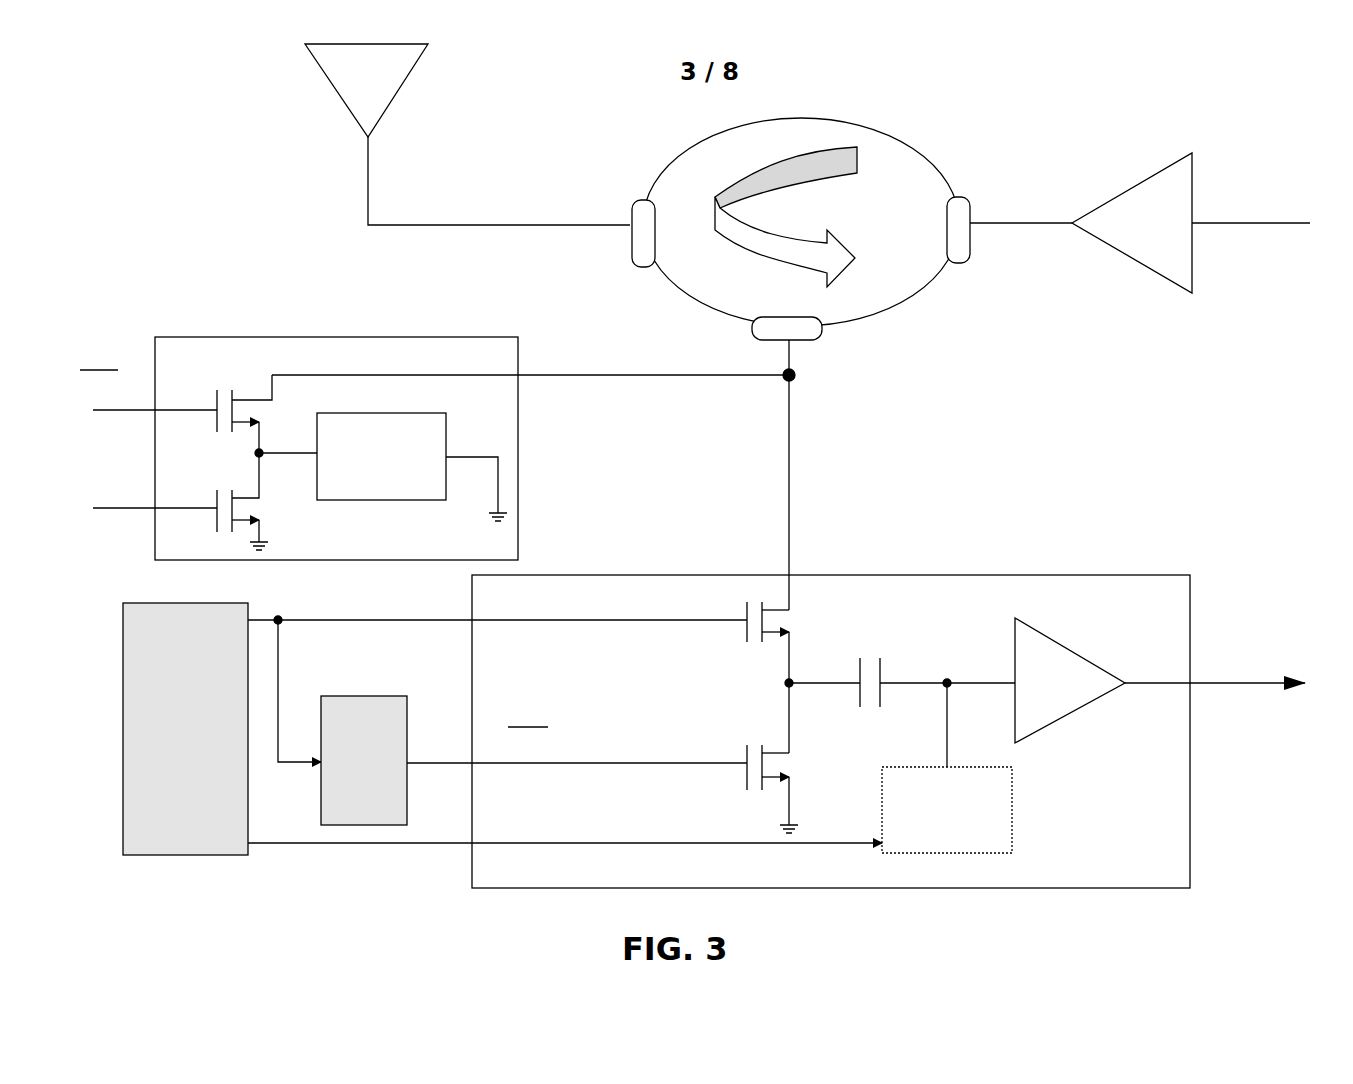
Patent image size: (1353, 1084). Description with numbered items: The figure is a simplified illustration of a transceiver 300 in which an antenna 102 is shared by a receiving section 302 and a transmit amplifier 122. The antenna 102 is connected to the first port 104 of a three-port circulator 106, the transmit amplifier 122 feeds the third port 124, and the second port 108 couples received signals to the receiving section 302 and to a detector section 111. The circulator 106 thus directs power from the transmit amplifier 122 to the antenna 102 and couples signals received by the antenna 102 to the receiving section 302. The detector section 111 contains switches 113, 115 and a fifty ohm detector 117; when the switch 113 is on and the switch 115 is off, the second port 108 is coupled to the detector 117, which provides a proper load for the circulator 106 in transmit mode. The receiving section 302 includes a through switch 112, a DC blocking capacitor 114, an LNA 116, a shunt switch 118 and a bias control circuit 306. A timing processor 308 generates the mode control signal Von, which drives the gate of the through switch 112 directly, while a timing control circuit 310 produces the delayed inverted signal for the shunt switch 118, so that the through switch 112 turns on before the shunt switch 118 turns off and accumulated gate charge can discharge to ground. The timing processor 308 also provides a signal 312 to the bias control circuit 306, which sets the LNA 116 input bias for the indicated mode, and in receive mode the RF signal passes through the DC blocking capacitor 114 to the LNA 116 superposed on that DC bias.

The transceiver 300 is at (1092, 125).
The antenna 102 is at (385, 95).
The first port 104 is at (646, 212).
The three-port circulator 106 is at (820, 128).
The second port 108 is at (810, 330).
The third port 124 is at (960, 208).
The transmit amplifier 122 is at (1205, 185).
The detector section 111 is at (328, 352).
The switch 113 is at (223, 388).
The switch 115 is at (225, 485).
The 50 ohm detector 117 is at (446, 433).
The receiving section 302 is at (957, 590).
The timing processor 308 is at (435, 729).
The timing control circuit 310 is at (370, 672).
The signal 312 is at (573, 838).
The through switch 112 is at (740, 636).
The shunt switch 118 is at (752, 740).
The DC blocking capacitor 114 is at (852, 698).
The LNA 116 is at (1053, 655).
The bias control circuit 306 is at (990, 780).